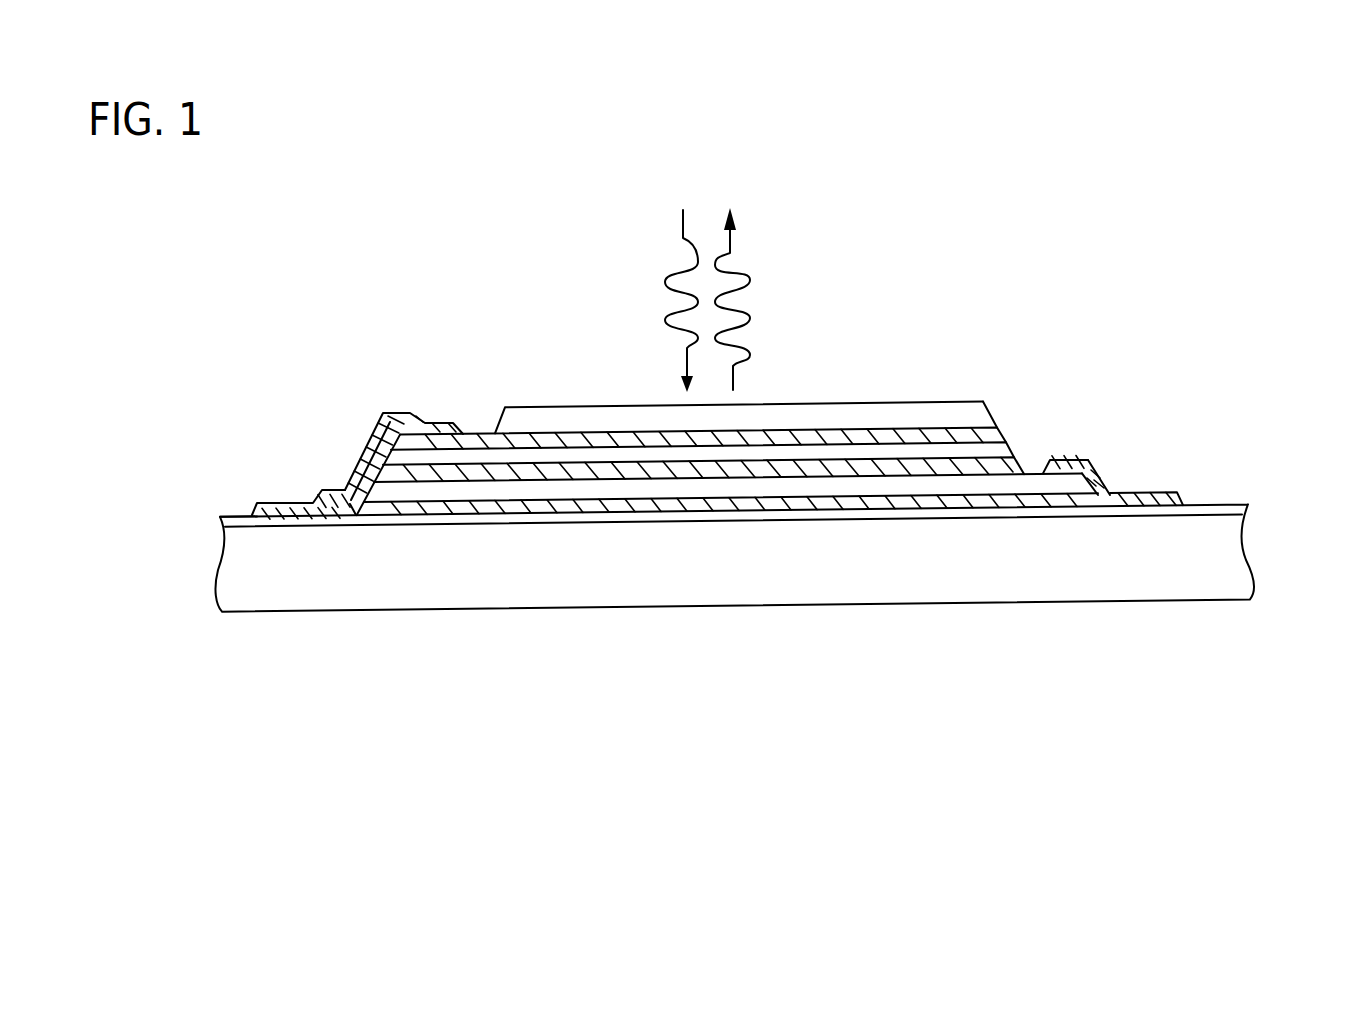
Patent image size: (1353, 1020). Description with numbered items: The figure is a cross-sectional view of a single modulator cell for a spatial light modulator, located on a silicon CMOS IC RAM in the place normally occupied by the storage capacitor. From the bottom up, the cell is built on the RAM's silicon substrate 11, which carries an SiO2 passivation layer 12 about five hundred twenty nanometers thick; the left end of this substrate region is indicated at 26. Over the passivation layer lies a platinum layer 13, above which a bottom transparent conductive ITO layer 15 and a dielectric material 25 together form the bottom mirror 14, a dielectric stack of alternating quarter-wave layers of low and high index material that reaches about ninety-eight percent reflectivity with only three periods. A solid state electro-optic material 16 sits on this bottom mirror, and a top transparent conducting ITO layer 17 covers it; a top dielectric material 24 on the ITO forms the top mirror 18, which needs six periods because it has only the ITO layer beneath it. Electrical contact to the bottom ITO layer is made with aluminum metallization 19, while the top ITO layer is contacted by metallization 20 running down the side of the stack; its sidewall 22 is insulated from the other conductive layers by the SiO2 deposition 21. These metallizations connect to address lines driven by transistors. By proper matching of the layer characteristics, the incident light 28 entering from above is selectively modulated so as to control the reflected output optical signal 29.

The silicon substrate 11 is at (650, 605).
The SiO2 passivation layer 12 is at (1225, 502).
The platinum layer 13 is at (1080, 500).
The bottom mirror 14 is at (968, 498).
The bottom transparent conductive ITO layer 15 is at (1036, 458).
The solid state electro-optic material 16 is at (837, 452).
The top transparent conducting ITO layer 17 is at (922, 428).
The top mirror 18 is at (1012, 417).
The aluminum metallization 19 is at (1098, 473).
The metallization 20 is at (383, 413).
The SiO2 deposition 21 is at (350, 479).
The sidewall 22 is at (361, 458).
The top dielectric material 24 is at (877, 402).
The dielectric material 25 is at (1073, 487).
The end portion of substrate 26 is at (238, 513).
The incident light 28 is at (683, 238).
The output optical signal 29 is at (750, 262).